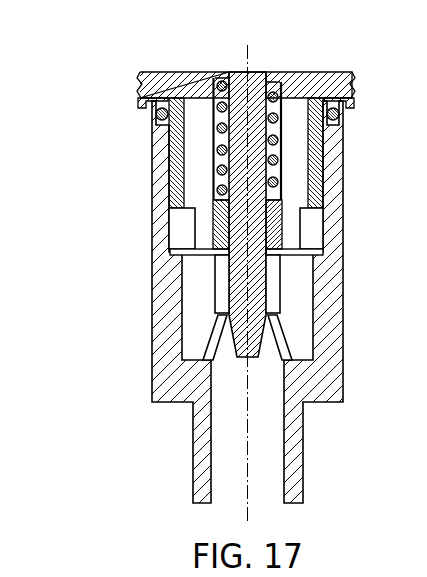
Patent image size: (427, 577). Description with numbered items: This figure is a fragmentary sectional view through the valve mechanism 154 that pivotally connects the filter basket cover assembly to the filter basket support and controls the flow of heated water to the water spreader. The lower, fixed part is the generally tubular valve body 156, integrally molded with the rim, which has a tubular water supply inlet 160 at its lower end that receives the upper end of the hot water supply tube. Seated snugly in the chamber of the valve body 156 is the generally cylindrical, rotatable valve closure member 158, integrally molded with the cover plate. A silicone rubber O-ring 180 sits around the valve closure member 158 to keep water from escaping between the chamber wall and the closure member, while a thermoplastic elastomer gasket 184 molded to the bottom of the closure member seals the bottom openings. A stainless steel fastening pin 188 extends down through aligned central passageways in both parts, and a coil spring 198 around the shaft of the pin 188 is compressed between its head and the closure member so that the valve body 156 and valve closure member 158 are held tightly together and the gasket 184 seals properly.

The valve mechanism 154 is at (121, 77).
The valve body 156 is at (153, 374).
The valve closure member 158 is at (333, 72).
The water supply inlet 160 is at (270, 470).
The O-ring 180 is at (158, 108).
The gasket 184 is at (275, 257).
The fastening pin 188 is at (257, 83).
The coil spring 198 is at (216, 106).